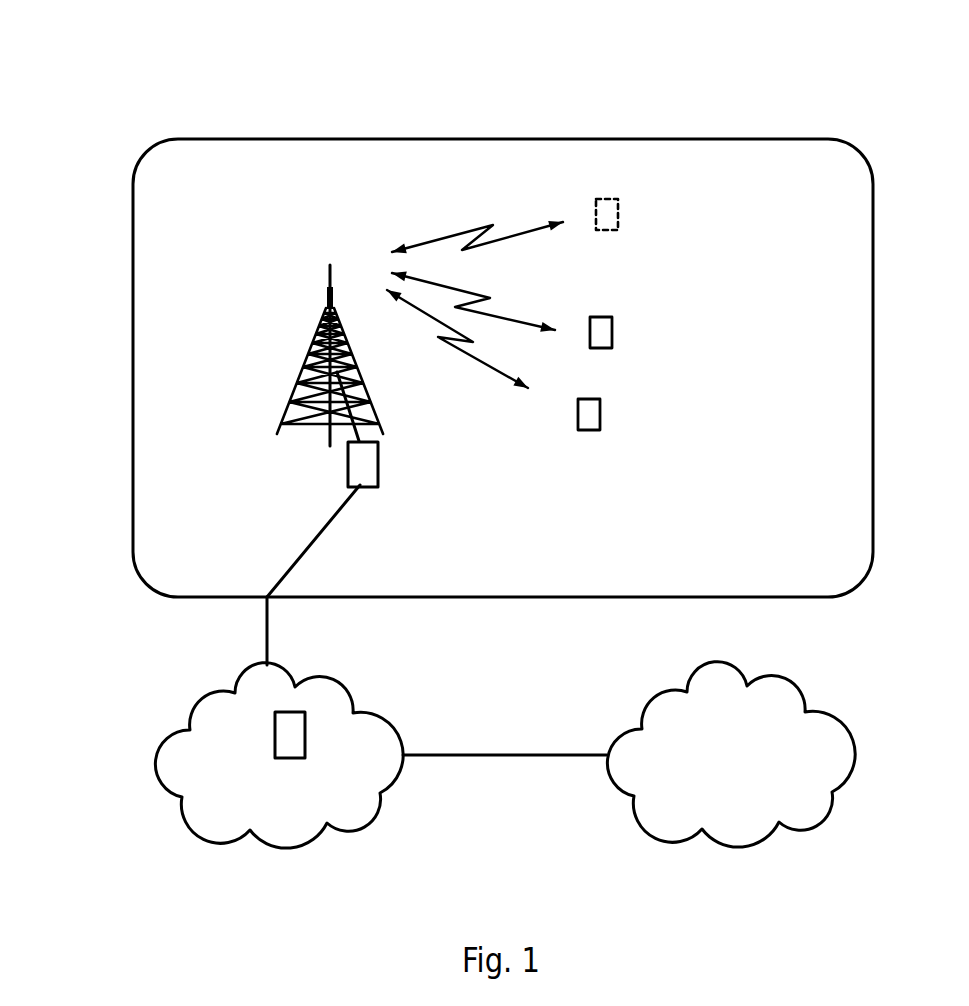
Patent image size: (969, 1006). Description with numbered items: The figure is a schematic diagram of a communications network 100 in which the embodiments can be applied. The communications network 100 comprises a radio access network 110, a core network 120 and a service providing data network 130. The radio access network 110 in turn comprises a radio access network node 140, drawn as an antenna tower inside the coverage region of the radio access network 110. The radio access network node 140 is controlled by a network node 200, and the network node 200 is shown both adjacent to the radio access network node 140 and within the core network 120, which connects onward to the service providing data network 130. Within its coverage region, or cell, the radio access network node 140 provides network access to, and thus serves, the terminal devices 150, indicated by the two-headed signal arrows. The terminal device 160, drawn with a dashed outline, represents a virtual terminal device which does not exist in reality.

The communications network 100 is at (220, 80).
The radio access network 110 is at (133, 420).
The core network 120 is at (252, 732).
The service providing data network 130 is at (760, 773).
The radio access network node 140 is at (328, 287).
The terminal device 150 is at (612, 328).
The virtual terminal device 160 is at (618, 211).
The network node 200 is at (378, 462).